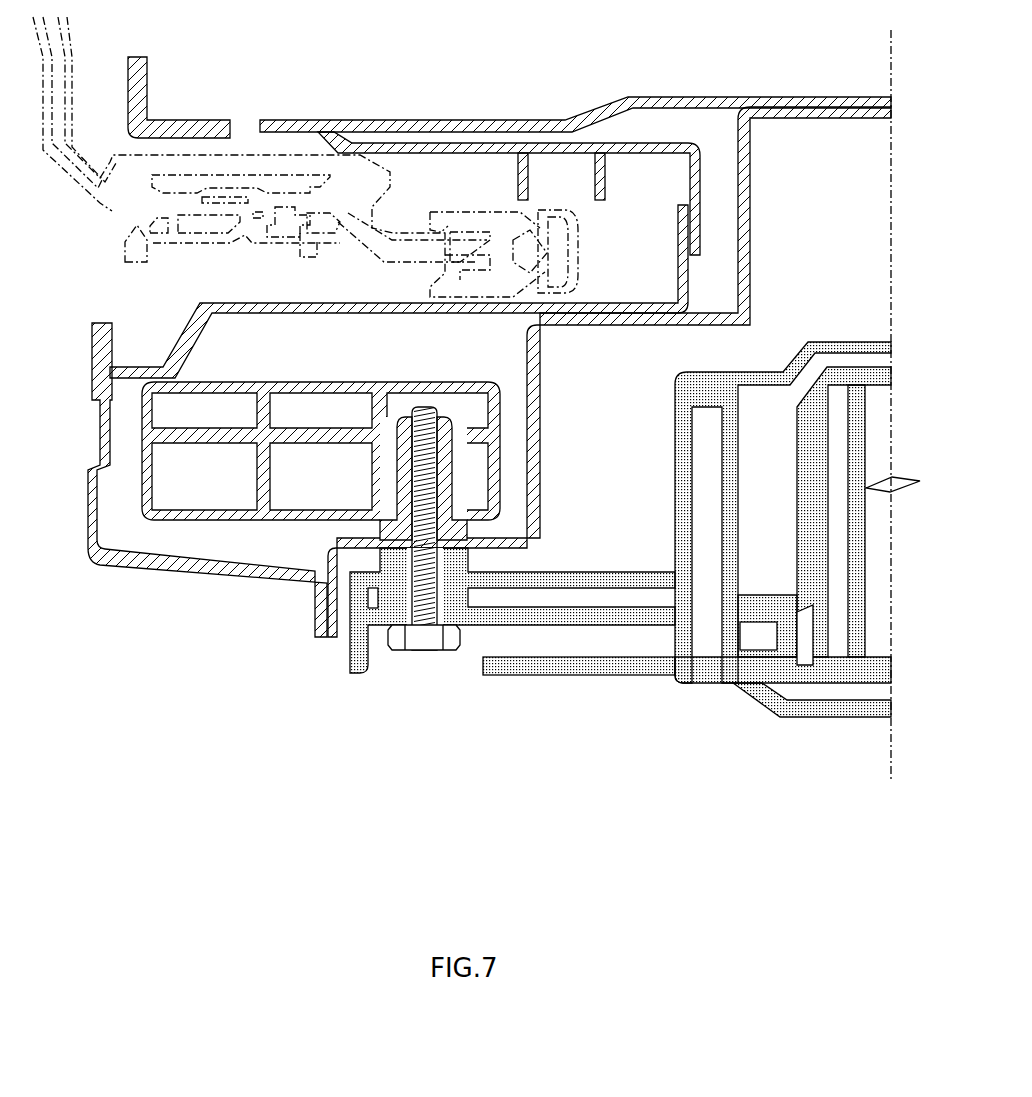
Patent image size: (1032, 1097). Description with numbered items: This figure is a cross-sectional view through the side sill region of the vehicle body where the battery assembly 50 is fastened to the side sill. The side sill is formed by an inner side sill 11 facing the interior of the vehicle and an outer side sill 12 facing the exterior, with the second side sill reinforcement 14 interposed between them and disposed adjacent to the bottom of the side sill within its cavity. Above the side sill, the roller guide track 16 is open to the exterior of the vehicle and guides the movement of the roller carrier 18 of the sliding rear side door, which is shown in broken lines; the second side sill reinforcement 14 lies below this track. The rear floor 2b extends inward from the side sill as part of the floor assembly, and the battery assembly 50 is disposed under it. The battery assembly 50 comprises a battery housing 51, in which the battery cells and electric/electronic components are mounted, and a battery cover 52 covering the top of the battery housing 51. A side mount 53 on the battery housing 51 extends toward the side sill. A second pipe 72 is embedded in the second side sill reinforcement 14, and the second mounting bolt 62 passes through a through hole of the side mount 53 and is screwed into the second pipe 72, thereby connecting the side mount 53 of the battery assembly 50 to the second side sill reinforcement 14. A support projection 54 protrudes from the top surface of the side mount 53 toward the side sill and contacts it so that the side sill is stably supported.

The rear floor 2b is at (508, 127).
The inner side sill 11 is at (753, 191).
The outer side sill 12 is at (90, 478).
The second side sill reinforcement 14 is at (147, 492).
The roller guide track 16 is at (695, 274).
The roller carrier 18 is at (115, 208).
The battery assembly 50 is at (620, 566).
The battery housing 51 is at (732, 677).
The battery cover 52 is at (773, 372).
The side mount 53 is at (563, 664).
The support projection 54 is at (467, 558).
The second mounting bolt 62 is at (433, 490).
The second pipe 72 is at (447, 462).